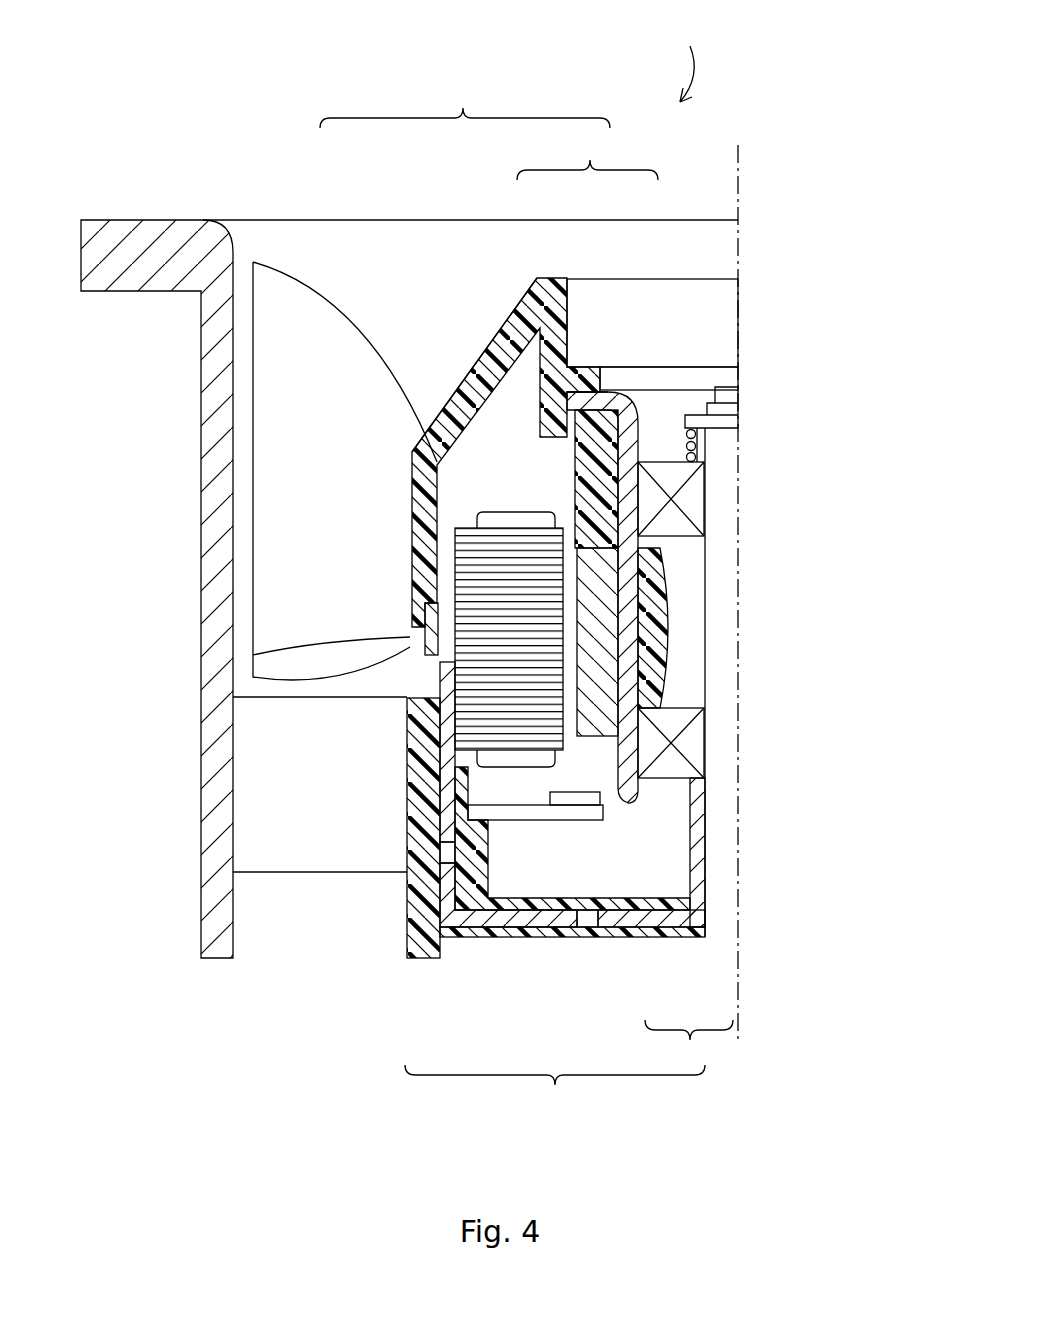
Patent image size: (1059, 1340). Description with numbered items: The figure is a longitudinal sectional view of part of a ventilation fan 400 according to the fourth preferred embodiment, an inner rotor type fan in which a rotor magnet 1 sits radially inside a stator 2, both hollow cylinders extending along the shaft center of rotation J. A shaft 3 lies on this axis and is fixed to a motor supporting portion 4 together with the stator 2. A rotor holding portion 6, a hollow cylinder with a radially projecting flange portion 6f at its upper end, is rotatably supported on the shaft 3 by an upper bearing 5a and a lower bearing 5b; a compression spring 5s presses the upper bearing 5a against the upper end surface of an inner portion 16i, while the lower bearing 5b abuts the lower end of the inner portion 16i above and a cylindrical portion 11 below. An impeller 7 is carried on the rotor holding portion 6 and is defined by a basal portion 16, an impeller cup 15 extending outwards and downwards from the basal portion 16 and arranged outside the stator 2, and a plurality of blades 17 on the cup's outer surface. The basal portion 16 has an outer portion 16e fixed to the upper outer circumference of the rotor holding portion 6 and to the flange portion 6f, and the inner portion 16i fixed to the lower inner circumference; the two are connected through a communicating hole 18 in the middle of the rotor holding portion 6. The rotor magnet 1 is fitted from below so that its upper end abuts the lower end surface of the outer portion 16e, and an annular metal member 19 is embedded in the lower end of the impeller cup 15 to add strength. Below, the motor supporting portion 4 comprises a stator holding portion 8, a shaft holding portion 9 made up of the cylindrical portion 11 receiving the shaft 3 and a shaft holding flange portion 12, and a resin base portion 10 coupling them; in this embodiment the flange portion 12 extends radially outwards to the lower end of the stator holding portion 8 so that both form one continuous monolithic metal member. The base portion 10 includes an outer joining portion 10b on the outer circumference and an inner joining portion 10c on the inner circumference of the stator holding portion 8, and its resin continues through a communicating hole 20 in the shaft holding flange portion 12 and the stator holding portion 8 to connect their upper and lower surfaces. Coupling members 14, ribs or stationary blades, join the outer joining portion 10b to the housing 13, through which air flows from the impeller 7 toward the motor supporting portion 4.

The ventilation fan 400 is at (687, 56).
The impeller 7 is at (465, 99).
The blades 17 is at (325, 340).
The impeller cup 15 is at (458, 365).
The basal portion 16 is at (575, 375).
The outer portion 16e is at (585, 488).
The inner portion 16i is at (652, 560).
The shaft center of rotation J is at (748, 149).
The flange portion 6f is at (583, 396).
The shaft 3 is at (728, 392).
The compression spring 5s is at (695, 442).
The upper bearing 5a is at (693, 495).
The lower bearing 5b is at (693, 740).
The rotor magnet 1 is at (587, 568).
The stator 2 is at (477, 598).
The communicating hole 18 is at (585, 512).
The annular metal member 19 is at (410, 634).
The rotor holding portion 6 is at (630, 638).
The housing 13 is at (205, 776).
The coupling members 14 is at (262, 836).
The outer joining portion 10b is at (417, 763).
The communicating hole 20 is at (443, 857).
The inner joining portion 10c is at (467, 770).
The base portion 10 is at (535, 927).
The stator holding portion 8 is at (432, 918).
The shaft holding flange portion 12 is at (660, 918).
The cylindrical portion 11 is at (702, 850).
The shaft holding portion 9 is at (689, 1047).
The motor supporting portion 4 is at (555, 1094).